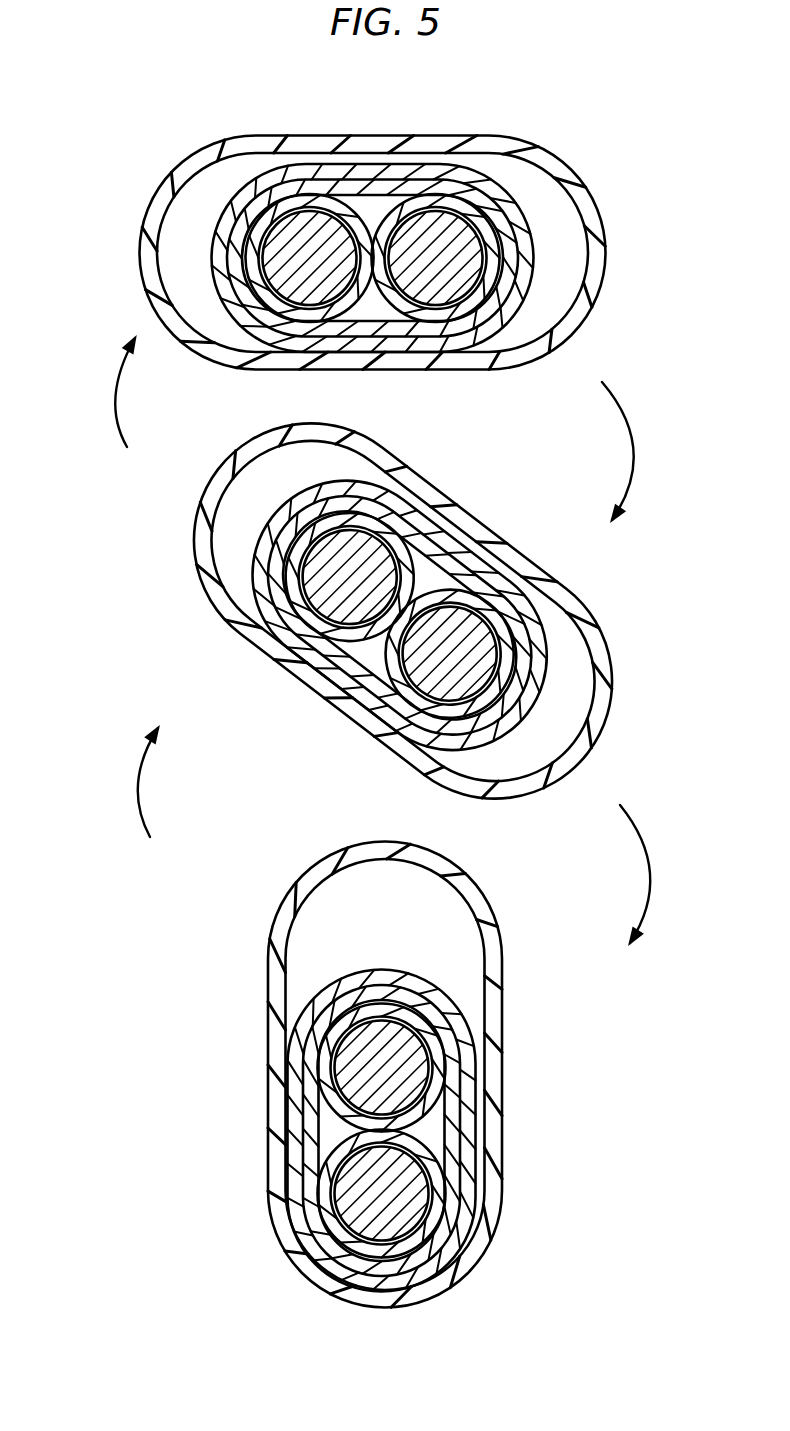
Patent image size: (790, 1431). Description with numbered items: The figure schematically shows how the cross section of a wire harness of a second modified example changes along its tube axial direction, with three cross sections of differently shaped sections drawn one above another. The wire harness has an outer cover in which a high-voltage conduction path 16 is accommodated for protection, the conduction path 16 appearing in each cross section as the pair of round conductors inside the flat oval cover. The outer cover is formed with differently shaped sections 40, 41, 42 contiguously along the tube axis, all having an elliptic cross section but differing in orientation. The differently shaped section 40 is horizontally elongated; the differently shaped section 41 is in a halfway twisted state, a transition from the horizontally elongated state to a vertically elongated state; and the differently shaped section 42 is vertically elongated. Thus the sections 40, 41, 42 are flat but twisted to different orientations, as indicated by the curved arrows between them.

The high-voltage conduction path 16 is at (512, 193).
The differently shaped section 40 is at (140, 283).
The differently shaped section 41 is at (205, 603).
The differently shaped section 42 is at (265, 982).